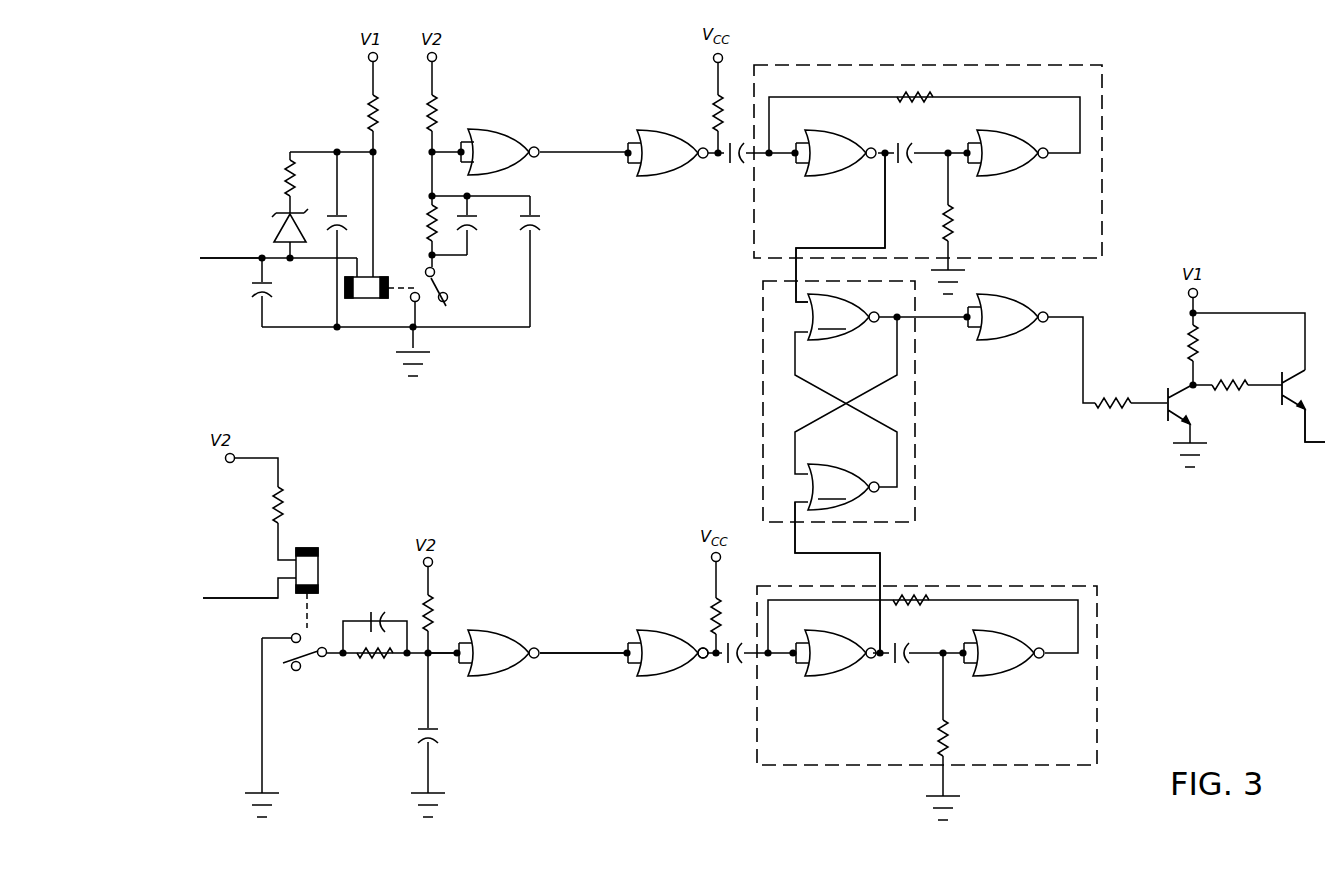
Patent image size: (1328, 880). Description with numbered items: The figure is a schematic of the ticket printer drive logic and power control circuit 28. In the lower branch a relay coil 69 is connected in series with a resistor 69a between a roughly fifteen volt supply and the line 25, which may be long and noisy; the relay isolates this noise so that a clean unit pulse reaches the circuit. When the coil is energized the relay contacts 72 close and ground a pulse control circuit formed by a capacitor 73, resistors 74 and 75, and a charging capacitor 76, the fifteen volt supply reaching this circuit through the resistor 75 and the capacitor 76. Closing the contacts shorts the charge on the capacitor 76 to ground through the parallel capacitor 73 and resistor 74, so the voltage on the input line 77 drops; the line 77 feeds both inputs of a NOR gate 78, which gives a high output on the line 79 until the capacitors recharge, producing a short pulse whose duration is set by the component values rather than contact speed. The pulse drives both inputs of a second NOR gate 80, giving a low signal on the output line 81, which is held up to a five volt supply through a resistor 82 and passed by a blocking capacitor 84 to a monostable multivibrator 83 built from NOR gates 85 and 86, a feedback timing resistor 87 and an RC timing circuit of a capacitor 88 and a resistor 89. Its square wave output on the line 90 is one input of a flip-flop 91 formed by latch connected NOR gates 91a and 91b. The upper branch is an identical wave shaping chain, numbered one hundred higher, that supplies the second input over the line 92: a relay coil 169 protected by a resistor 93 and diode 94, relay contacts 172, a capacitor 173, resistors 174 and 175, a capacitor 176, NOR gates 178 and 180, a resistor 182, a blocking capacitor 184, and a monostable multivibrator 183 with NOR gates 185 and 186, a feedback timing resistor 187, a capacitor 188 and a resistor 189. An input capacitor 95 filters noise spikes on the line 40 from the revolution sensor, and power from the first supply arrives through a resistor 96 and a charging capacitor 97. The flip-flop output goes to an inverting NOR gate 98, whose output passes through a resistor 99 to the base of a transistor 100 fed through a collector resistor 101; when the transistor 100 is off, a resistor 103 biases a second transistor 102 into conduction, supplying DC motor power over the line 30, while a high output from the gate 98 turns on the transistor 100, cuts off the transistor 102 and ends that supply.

The line 25 is at (220, 598).
The drive logic and power control circuit 28 is at (138, 702).
The line 30 is at (1318, 442).
The line 40 is at (240, 258).
The relay coil 69 is at (320, 576).
The resistor 69a is at (304, 510).
The relay contacts 72 is at (312, 660).
The capacitor 73 is at (370, 612).
The resistor 74 is at (374, 660).
The resistor 75 is at (434, 612).
The capacitor 76 is at (436, 734).
The input line 77 is at (442, 648).
The NOR gate 78 is at (488, 630).
The line 79 is at (562, 653).
The second NOR gate 80 is at (650, 630).
The output line 81 is at (702, 666).
The resistor 82 is at (710, 604).
The monostable multivibrator 83 is at (1097, 644).
The blocking capacitor 84 is at (730, 668).
The NOR gate 85 is at (816, 630).
The NOR gate 86 is at (992, 630).
The feedback timing resistor 87 is at (912, 603).
The capacitor 88 is at (898, 666).
The resistor 89 is at (946, 744).
The output line 90 is at (878, 553).
The flip-flop 91 is at (844, 467).
The NOR gate 91a is at (843, 487).
The NOR gate 91b is at (843, 317).
The line 92 is at (832, 248).
The resistor 93 is at (286, 178).
The diode 94 is at (273, 214).
The input capacitor 95 is at (252, 288).
The resistor 96 is at (368, 104).
The charging capacitor 97 is at (341, 214).
The inverting NOR gate 98 is at (1012, 296).
The resistor 99 is at (1122, 392).
The transistor 100 is at (1166, 412).
The collector resistor 101 is at (1198, 338).
The second transistor 102 is at (1280, 400).
The resistor 103 is at (1228, 380).
The relay coil 169 is at (372, 300).
The relay contacts 172 is at (447, 290).
The capacitor 173 is at (474, 218).
The resistor 174 is at (424, 226).
The resistor 175 is at (436, 108).
The capacitor 176 is at (535, 220).
The NOR gate 178 is at (510, 128).
The NOR gate 180 is at (642, 130).
The resistor 182 is at (714, 110).
The monostable multivibrator 183 is at (1102, 107).
The blocking capacitor 184 is at (735, 165).
The NOR gate 185 is at (822, 130).
The NOR gate 186 is at (994, 130).
The feedback timing resistor 187 is at (918, 95).
The capacitor 188 is at (918, 132).
The resistor 189 is at (955, 236).